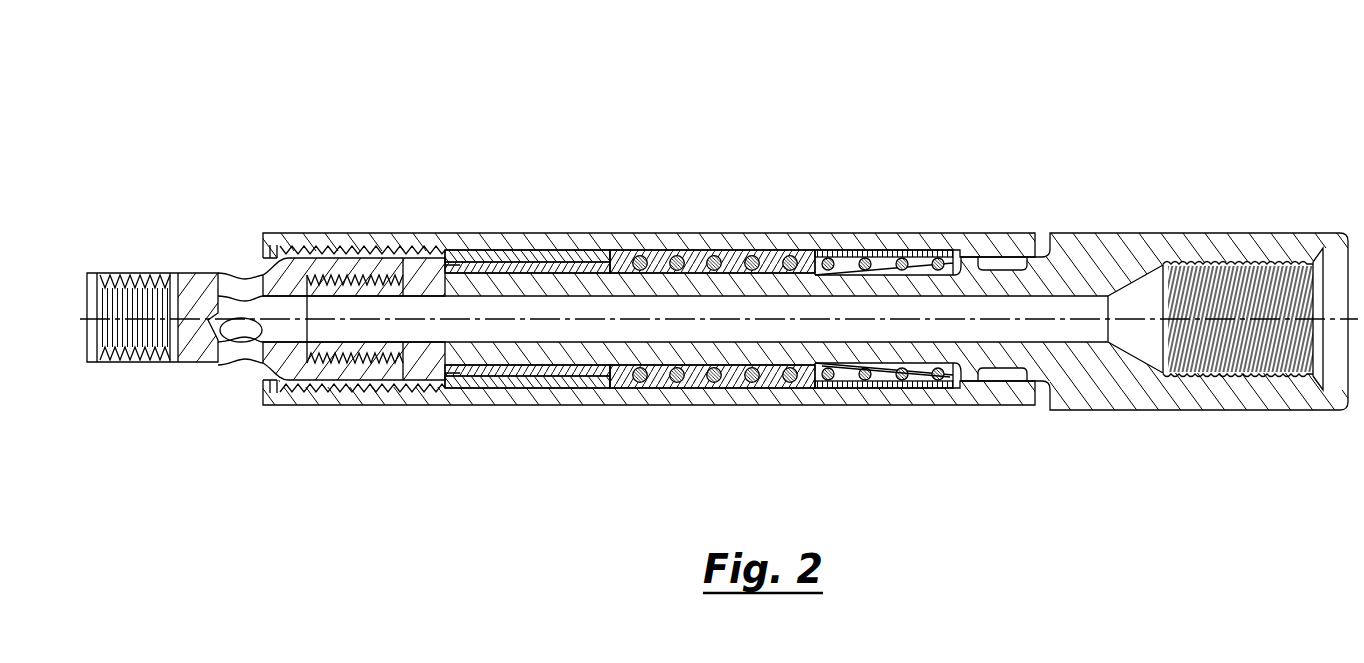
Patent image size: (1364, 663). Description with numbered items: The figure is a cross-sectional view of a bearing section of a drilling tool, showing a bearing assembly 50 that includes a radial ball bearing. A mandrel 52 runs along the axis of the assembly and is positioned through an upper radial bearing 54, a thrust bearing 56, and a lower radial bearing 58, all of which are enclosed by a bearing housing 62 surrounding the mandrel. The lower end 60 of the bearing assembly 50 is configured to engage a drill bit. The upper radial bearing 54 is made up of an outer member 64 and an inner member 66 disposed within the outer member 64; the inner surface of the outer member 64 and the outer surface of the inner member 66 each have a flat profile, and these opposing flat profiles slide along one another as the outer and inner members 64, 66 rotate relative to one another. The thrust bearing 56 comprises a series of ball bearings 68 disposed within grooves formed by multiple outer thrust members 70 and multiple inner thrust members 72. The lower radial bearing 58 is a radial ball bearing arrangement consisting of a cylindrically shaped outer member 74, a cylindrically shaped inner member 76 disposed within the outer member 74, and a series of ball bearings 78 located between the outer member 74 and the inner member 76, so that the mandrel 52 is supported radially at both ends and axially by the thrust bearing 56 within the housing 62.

The bearing assembly 50 is at (887, 127).
The mandrel 52 is at (403, 258).
The upper radial bearing 54 is at (553, 250).
The thrust bearing 56 is at (738, 250).
The lower radial bearing 58 is at (898, 250).
The lower end 60 is at (1288, 233).
The bearing housing 62 is at (303, 233).
The outer member 64 is at (456, 390).
The inner member 66 is at (540, 377).
The ball bearings 68 is at (678, 383).
The outer thrust members 70 is at (612, 388).
The inner thrust members 72 is at (789, 382).
The outer member 74 is at (857, 387).
The inner member 76 is at (925, 388).
The ball bearings 78 is at (875, 383).